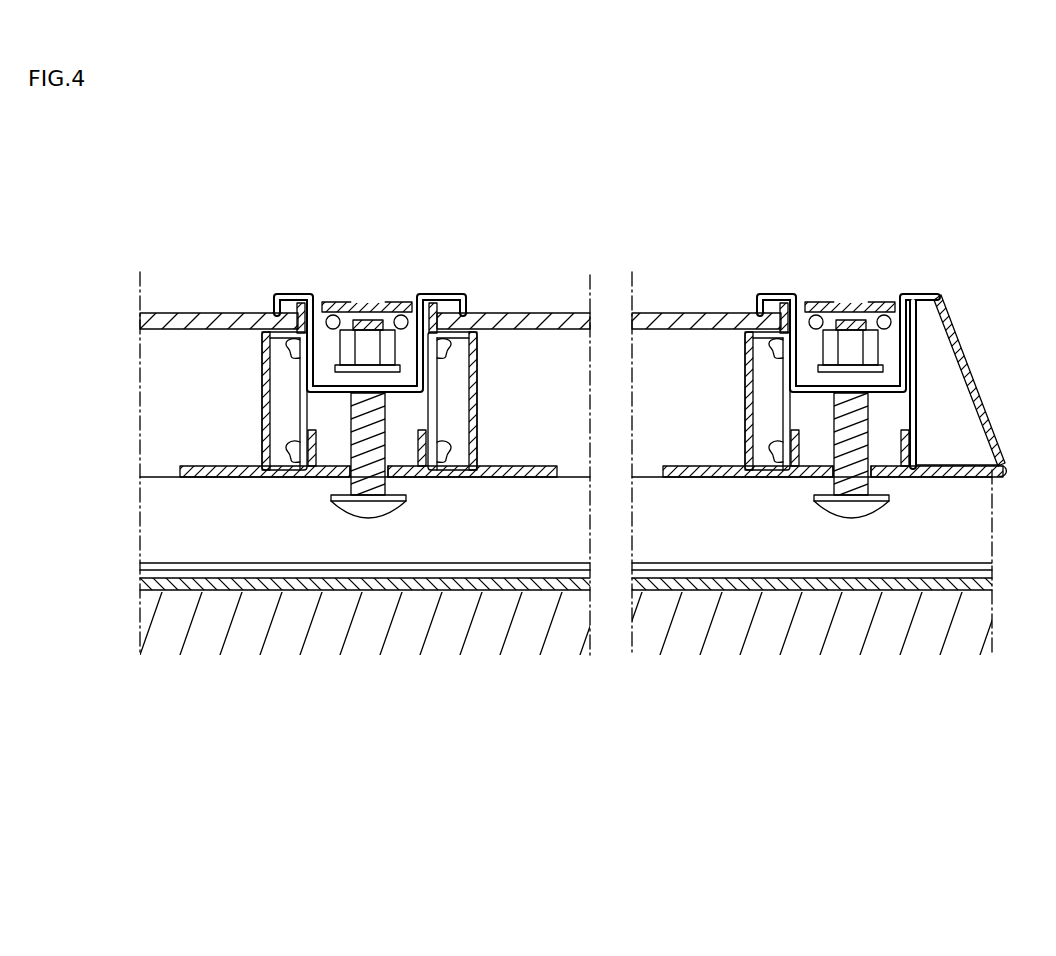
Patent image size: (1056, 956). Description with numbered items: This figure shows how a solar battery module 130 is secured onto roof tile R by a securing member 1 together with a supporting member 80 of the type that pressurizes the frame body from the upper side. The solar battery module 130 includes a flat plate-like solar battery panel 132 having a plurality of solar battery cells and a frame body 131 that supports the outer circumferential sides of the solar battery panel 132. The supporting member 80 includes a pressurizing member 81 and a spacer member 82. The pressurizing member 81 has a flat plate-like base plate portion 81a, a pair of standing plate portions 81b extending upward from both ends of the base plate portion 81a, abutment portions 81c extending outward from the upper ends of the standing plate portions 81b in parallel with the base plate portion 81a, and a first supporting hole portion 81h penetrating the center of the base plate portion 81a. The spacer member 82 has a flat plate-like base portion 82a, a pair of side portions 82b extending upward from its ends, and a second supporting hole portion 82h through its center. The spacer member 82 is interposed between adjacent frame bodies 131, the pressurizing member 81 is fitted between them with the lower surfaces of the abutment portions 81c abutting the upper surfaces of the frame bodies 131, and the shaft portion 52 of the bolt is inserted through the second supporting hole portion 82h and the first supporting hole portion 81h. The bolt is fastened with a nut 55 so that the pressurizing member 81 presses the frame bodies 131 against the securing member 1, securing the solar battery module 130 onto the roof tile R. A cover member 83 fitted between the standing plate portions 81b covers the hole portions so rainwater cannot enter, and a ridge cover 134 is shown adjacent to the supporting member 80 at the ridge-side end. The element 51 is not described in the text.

The securing member 1 is at (155, 513).
The roof tile R is at (368, 650).
The bolt 51 is at (370, 517).
The shaft portion 52 is at (432, 412).
The nut 55 is at (300, 348).
The supporting member 80 is at (415, 174).
The pressurizing member 81 is at (294, 274).
The base plate portion 81a is at (392, 302).
The standing plate portions 81b is at (276, 301).
The abutment portions 81c is at (441, 292).
The first supporting hole portion 81h is at (340, 302).
The spacer member 82 is at (415, 495).
The base portion 82a is at (322, 478).
The side portions 82b is at (311, 478).
The second supporting hole portion 82h is at (395, 486).
The cover member 83 is at (368, 292).
The solar battery module 130 is at (191, 355).
The frame body 131 is at (262, 416).
The solar battery panel 132 is at (529, 312).
The ridge cover 134 is at (975, 372).